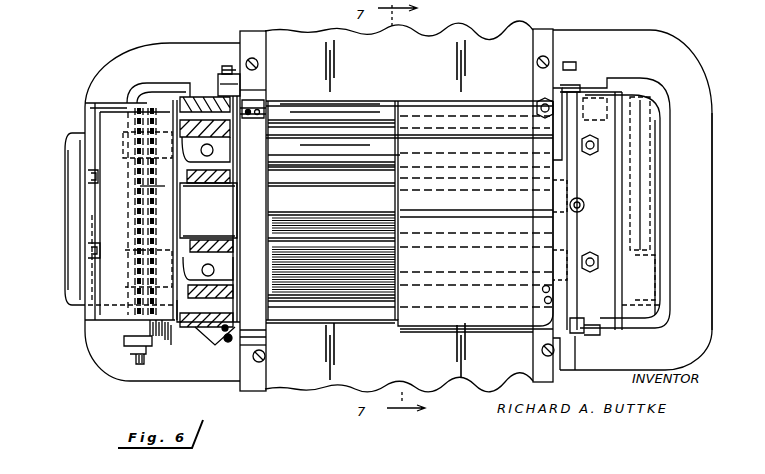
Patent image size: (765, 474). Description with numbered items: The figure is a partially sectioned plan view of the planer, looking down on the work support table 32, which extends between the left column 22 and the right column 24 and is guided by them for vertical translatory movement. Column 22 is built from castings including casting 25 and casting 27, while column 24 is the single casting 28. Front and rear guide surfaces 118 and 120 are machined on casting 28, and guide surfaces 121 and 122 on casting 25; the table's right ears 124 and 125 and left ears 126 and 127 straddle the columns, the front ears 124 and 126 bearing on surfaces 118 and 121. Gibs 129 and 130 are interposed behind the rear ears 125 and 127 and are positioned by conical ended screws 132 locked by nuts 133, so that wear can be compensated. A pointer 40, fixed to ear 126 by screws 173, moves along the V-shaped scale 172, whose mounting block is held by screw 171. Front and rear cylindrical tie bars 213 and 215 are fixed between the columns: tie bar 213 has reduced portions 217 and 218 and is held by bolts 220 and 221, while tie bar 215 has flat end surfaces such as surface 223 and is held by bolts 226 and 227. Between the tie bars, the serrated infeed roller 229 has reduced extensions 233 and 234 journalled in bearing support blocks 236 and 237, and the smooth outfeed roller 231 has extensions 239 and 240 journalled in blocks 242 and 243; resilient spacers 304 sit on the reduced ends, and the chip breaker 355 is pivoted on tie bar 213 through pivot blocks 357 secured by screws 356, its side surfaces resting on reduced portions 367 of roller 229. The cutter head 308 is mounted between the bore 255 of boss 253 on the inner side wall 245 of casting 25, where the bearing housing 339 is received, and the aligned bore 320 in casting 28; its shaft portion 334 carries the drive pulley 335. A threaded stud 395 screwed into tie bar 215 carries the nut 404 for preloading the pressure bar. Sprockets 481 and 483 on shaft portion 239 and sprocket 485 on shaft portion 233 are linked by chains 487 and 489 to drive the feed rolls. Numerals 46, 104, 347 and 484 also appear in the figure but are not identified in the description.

The left side column 22 is at (74, 306).
The casting 27 is at (84, 112).
The sprocket 483 is at (118, 104).
The casting 25 is at (170, 82).
The sprocket 481 is at (130, 130).
The bearing support block 242 is at (130, 155).
The bracket 484 is at (134, 178).
The endless roller chain 487 is at (135, 190).
The chain 489 is at (130, 240).
The sprocket 485 is at (134, 303).
The knob 46 is at (140, 362).
The bolt 226 is at (176, 118).
The bore 255 is at (208, 210).
The bearing housing 339 is at (220, 217).
The circular boss 253 is at (209, 226).
The inner side wall 245 is at (176, 243).
The bearing support block 236 is at (178, 257).
The reduced extension 233 is at (180, 292).
The bolt 220 is at (180, 308).
The scale 172 is at (175, 337).
The screw 171 is at (175, 345).
The front guide surface 121 is at (215, 342).
The pointer 40 is at (215, 352).
The screws 173 is at (235, 344).
The left rear ear 127 is at (262, 78).
The gib 130 is at (262, 90).
The flat surface 223 is at (266, 104).
The nuts 133 is at (228, 68).
The conical ended screws 132 is at (228, 66).
The rear guide surface 122 is at (222, 80).
The outfeed roller 231 is at (409, 210).
The rear tie bar 215 is at (382, 107).
The resilient spacer 304 is at (270, 150).
The reduced extension 239 is at (270, 162).
The cutter head 308 is at (391, 204).
The reduced portions 367 is at (268, 262).
The infeed roller 229 is at (386, 318).
The pivot block 357 is at (270, 312).
The front tie bar 213 is at (409, 230).
The chip breaker 355 is at (440, 339).
The reduced portion 217 is at (267, 333).
The left front ear 126 is at (267, 345).
The work support table 32 is at (441, 34).
The right rear ear 125 is at (560, 60).
The nut 404 is at (532, 95).
The threaded stud 395 is at (530, 110).
The gib 129 is at (578, 72).
The rear guide surface 120 is at (582, 92).
The casting 28 is at (612, 85).
The bolt 227 is at (666, 103).
The right side column 24 is at (667, 121).
The bearing support block 243 is at (668, 130).
The reduced extension 240 is at (668, 150).
The drive pulley 335 is at (672, 180).
The shaft portion 334 is at (668, 222).
The rod 104 is at (675, 248).
The bearing support block 237 is at (672, 283).
The bore 320 is at (545, 195).
The bushing 347 is at (568, 205).
The reduced extension 234 is at (542, 272).
The screws 356 is at (540, 297).
The reduced portion 218 is at (466, 335).
The front guide surface 118 is at (572, 330).
The bolt 221 is at (615, 330).
The right front ear 124 is at (573, 335).